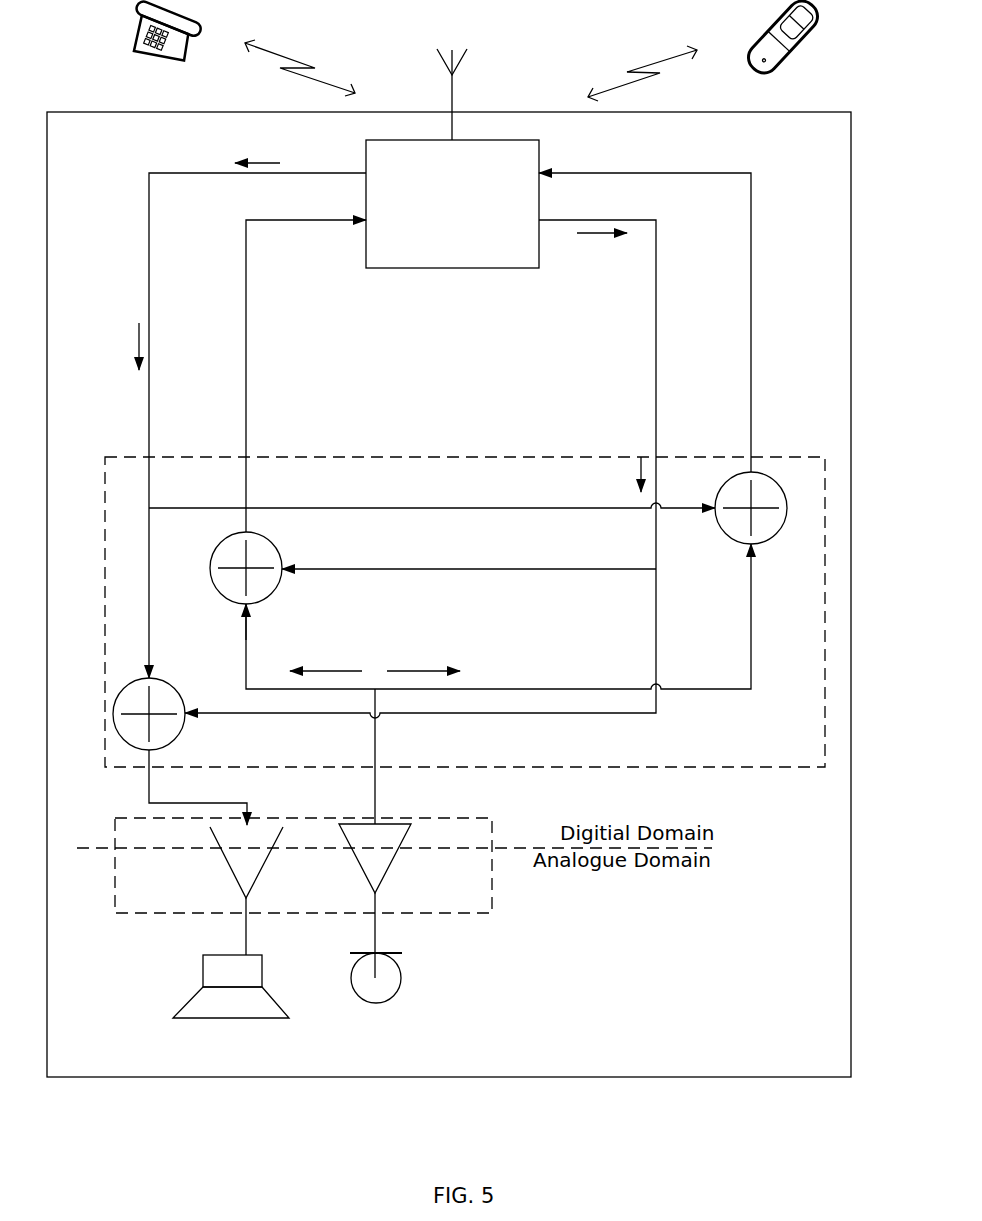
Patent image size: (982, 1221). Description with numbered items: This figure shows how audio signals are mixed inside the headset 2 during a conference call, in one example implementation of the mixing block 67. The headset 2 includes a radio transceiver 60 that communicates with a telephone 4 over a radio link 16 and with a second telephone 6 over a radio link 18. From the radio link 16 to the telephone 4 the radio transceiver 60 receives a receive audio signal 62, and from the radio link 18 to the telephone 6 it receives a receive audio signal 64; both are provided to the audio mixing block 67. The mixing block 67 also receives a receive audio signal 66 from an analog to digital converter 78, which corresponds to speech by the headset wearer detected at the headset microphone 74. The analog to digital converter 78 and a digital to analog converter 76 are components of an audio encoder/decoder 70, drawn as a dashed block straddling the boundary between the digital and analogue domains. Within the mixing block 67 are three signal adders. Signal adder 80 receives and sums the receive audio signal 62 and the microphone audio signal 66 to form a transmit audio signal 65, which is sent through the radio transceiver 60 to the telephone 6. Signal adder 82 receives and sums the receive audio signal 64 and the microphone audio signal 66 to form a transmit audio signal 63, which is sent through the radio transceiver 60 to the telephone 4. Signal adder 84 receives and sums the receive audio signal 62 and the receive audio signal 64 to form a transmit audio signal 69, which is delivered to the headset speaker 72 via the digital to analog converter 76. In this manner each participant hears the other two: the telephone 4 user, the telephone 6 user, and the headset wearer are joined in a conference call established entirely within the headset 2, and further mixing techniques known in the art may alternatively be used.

The headset 2 is at (672, 1077).
The telephone 4 is at (123, 67).
The telephone 6 is at (818, 45).
The radio link 16 is at (300, 64).
The radio link 18 is at (642, 70).
The radio transceiver 60 is at (452, 158).
The receive audio signal 62 is at (427, 414).
The transmit audio signal 63 is at (306, 364).
The receive audio signal 64 is at (420, 457).
The transmit audio signal 65 is at (645, 311).
The receive audio signal 66 is at (392, 756).
The audio mixing block 67 is at (772, 455).
The transmit audio signal 69 is at (198, 787).
The audio encoder/decoder 70 is at (278, 840).
The headset speaker 72 is at (186, 958).
The headset microphone 74 is at (436, 957).
The digital to analog converter 76 is at (227, 866).
The analog to digital converter 78 is at (358, 864).
The signal adder 80 is at (735, 540).
The signal adder 82 is at (277, 544).
The signal adder 84 is at (170, 685).